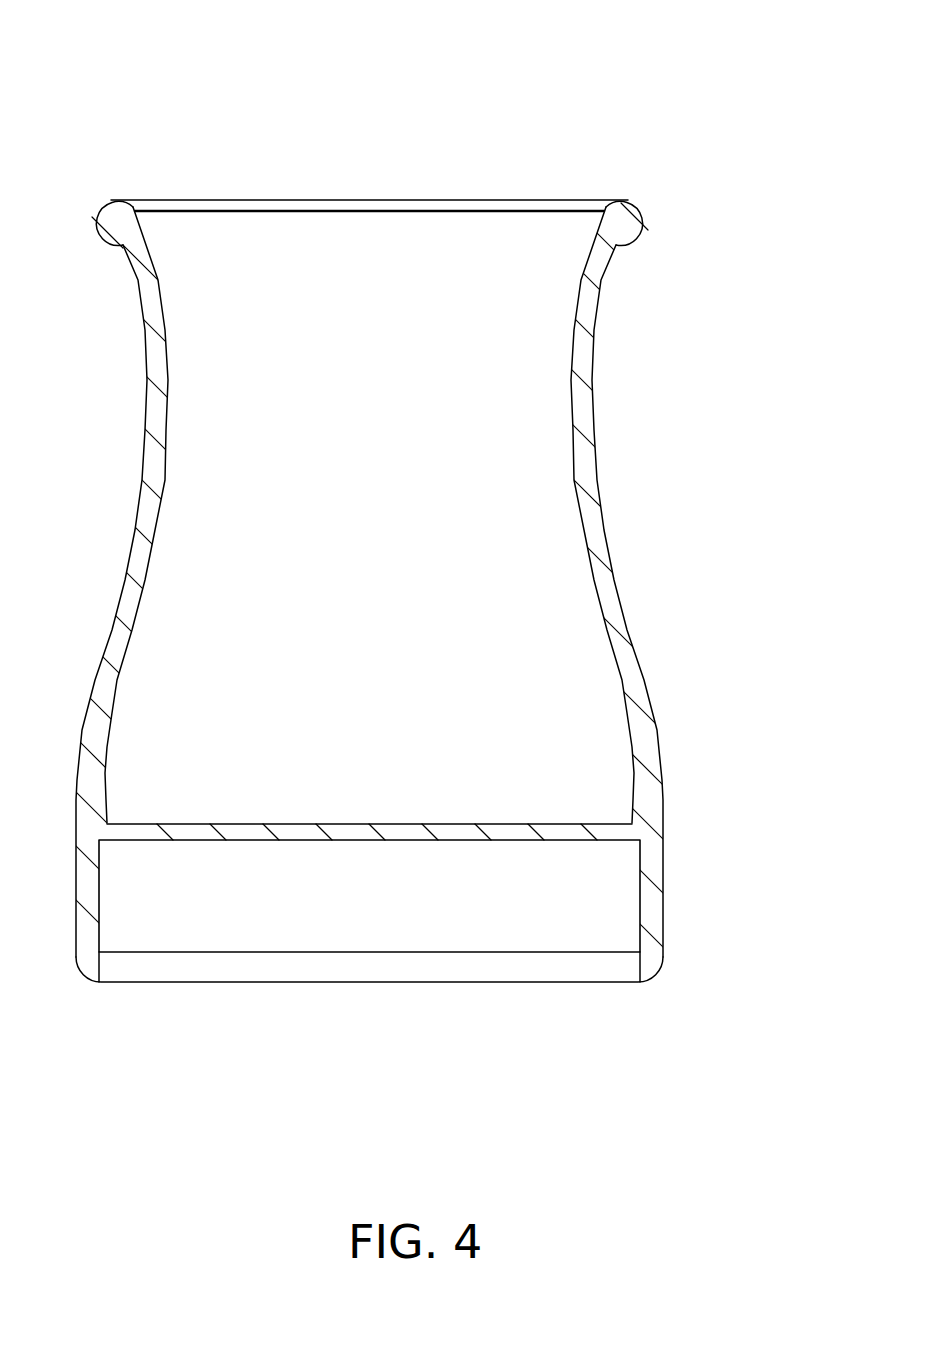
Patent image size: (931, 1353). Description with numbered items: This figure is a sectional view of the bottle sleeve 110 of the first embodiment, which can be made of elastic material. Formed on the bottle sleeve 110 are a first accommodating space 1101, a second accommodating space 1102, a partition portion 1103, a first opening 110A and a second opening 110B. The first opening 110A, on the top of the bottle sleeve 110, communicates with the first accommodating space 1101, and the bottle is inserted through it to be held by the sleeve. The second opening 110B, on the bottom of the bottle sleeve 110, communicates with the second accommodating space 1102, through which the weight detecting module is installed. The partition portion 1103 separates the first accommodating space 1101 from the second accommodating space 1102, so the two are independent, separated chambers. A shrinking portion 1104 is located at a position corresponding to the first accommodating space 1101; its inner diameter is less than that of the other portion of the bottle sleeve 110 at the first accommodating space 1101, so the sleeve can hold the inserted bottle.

The bottle sleeve 110 is at (465, 577).
The first opening 110A is at (225, 183).
The second opening 110B is at (187, 988).
The first accommodating space 1101 is at (355, 258).
The second accommodating space 1102 is at (338, 917).
The partition portion 1103 is at (442, 833).
The shrinking portion 1104 is at (582, 462).